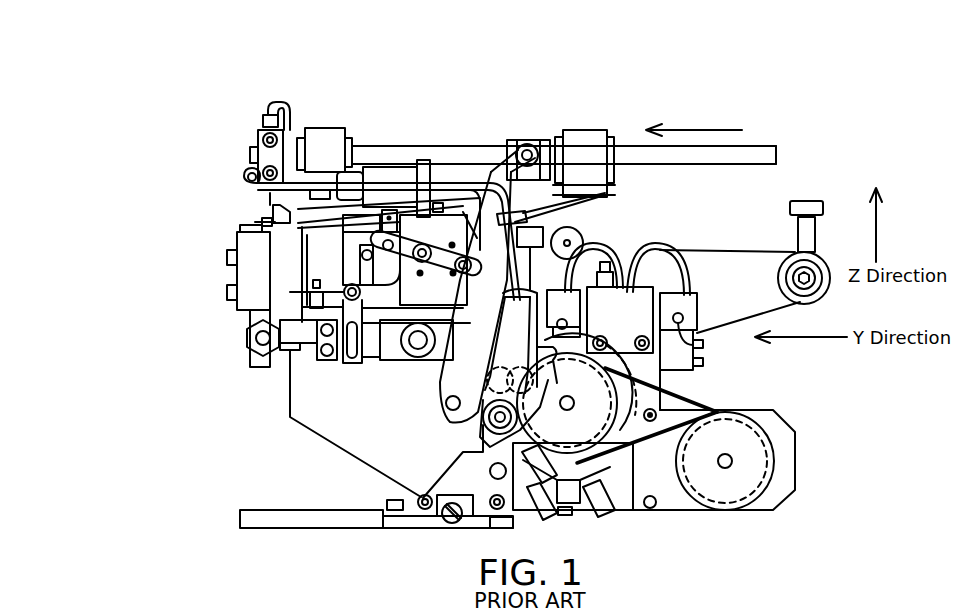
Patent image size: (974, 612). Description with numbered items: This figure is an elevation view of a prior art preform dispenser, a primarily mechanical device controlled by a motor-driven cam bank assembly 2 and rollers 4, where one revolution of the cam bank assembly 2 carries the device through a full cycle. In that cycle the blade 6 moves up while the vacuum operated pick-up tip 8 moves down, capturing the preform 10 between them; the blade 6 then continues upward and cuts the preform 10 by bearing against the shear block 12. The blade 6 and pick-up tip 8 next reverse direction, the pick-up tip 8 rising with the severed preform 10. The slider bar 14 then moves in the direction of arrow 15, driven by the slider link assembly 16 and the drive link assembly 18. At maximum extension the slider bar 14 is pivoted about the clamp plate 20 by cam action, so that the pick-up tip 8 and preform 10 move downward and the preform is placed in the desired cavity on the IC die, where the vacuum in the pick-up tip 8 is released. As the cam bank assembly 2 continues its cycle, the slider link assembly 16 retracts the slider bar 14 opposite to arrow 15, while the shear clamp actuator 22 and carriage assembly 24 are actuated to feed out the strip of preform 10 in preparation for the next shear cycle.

The cam bank assembly 2 is at (548, 508).
The rollers 4 is at (585, 236).
The blade 6 is at (240, 225).
The pick-up tip 8 is at (252, 222).
The preform 10 is at (264, 223).
The shear block 12 is at (288, 220).
The slider bar 14 is at (775, 146).
The arrow 15 is at (683, 129).
The slider link assembly 16 is at (527, 153).
The drive link assembly 18 is at (605, 368).
The clamp plate 20 is at (540, 226).
The shear clamp actuator 22 is at (313, 360).
The carriage assembly 24 is at (330, 207).